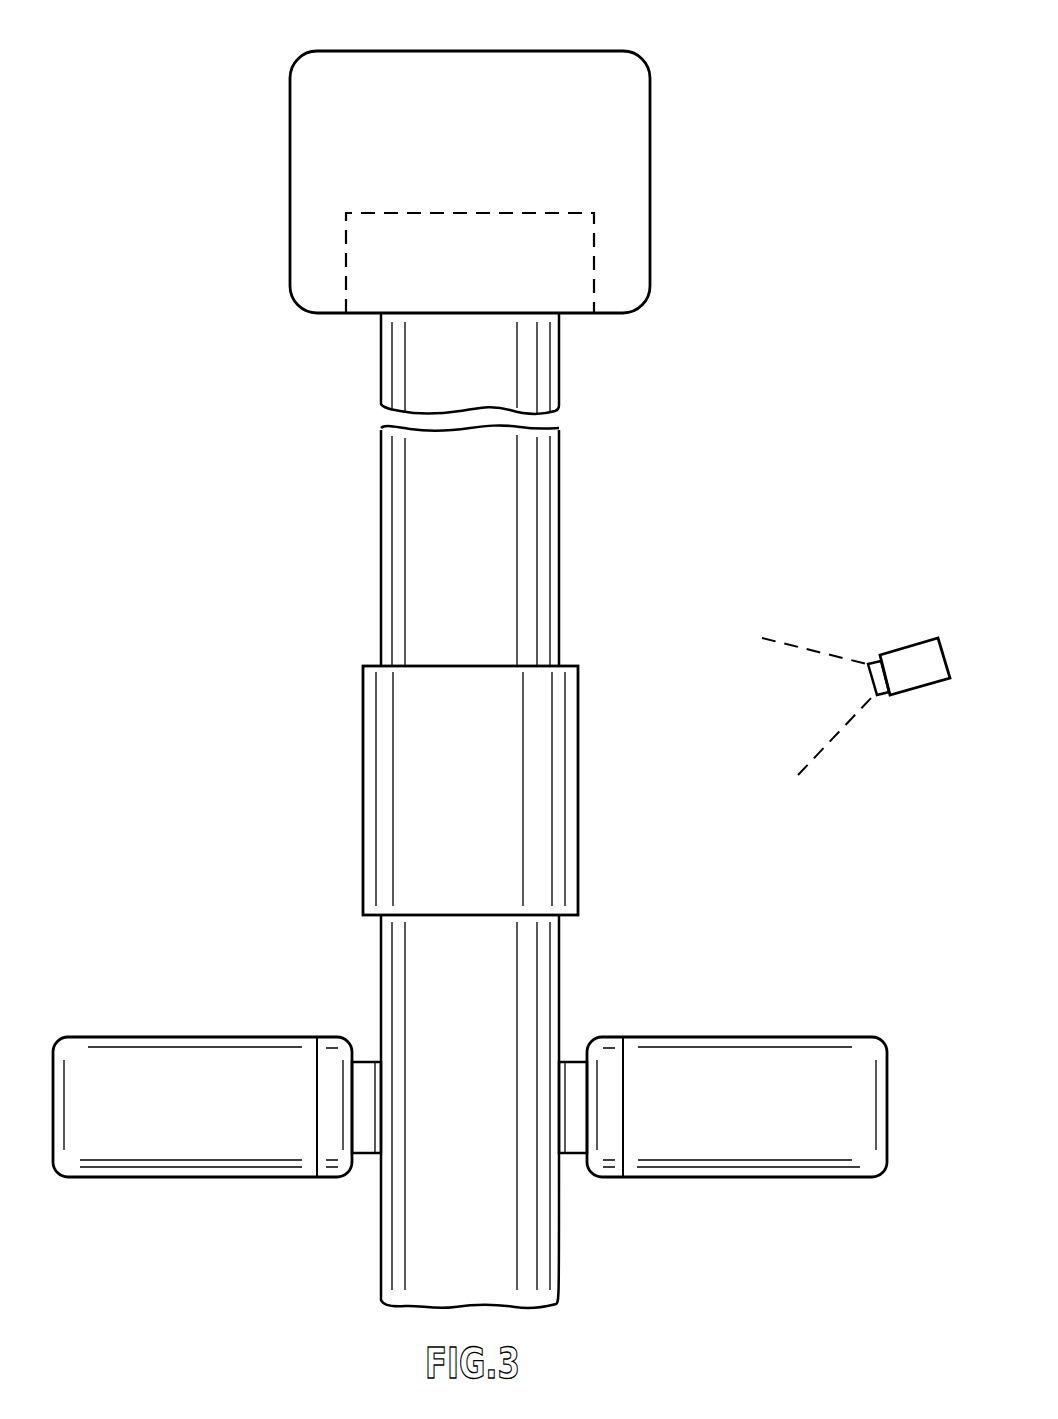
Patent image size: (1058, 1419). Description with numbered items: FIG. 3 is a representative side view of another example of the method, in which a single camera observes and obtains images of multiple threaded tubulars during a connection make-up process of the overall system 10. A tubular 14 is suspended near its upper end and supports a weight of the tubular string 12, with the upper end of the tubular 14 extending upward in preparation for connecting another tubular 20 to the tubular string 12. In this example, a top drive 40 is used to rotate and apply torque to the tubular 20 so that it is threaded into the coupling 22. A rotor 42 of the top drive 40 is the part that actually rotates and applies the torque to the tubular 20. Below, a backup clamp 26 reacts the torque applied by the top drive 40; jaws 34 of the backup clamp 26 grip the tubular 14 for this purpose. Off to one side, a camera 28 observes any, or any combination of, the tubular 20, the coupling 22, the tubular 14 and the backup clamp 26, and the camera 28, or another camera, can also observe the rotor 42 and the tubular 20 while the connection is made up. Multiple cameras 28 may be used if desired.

The exercise apparatus 10 is at (832, 63).
The tubular string 12 is at (374, 1212).
The tubular 14 is at (560, 990).
The tubular 20 is at (381, 455).
The coupling 22 is at (363, 782).
The backup clamp 26 is at (161, 1037).
The camera 28 is at (912, 645).
The jaws 34 is at (575, 1153).
The top drive 40 is at (290, 153).
The rotor 42 is at (594, 243).